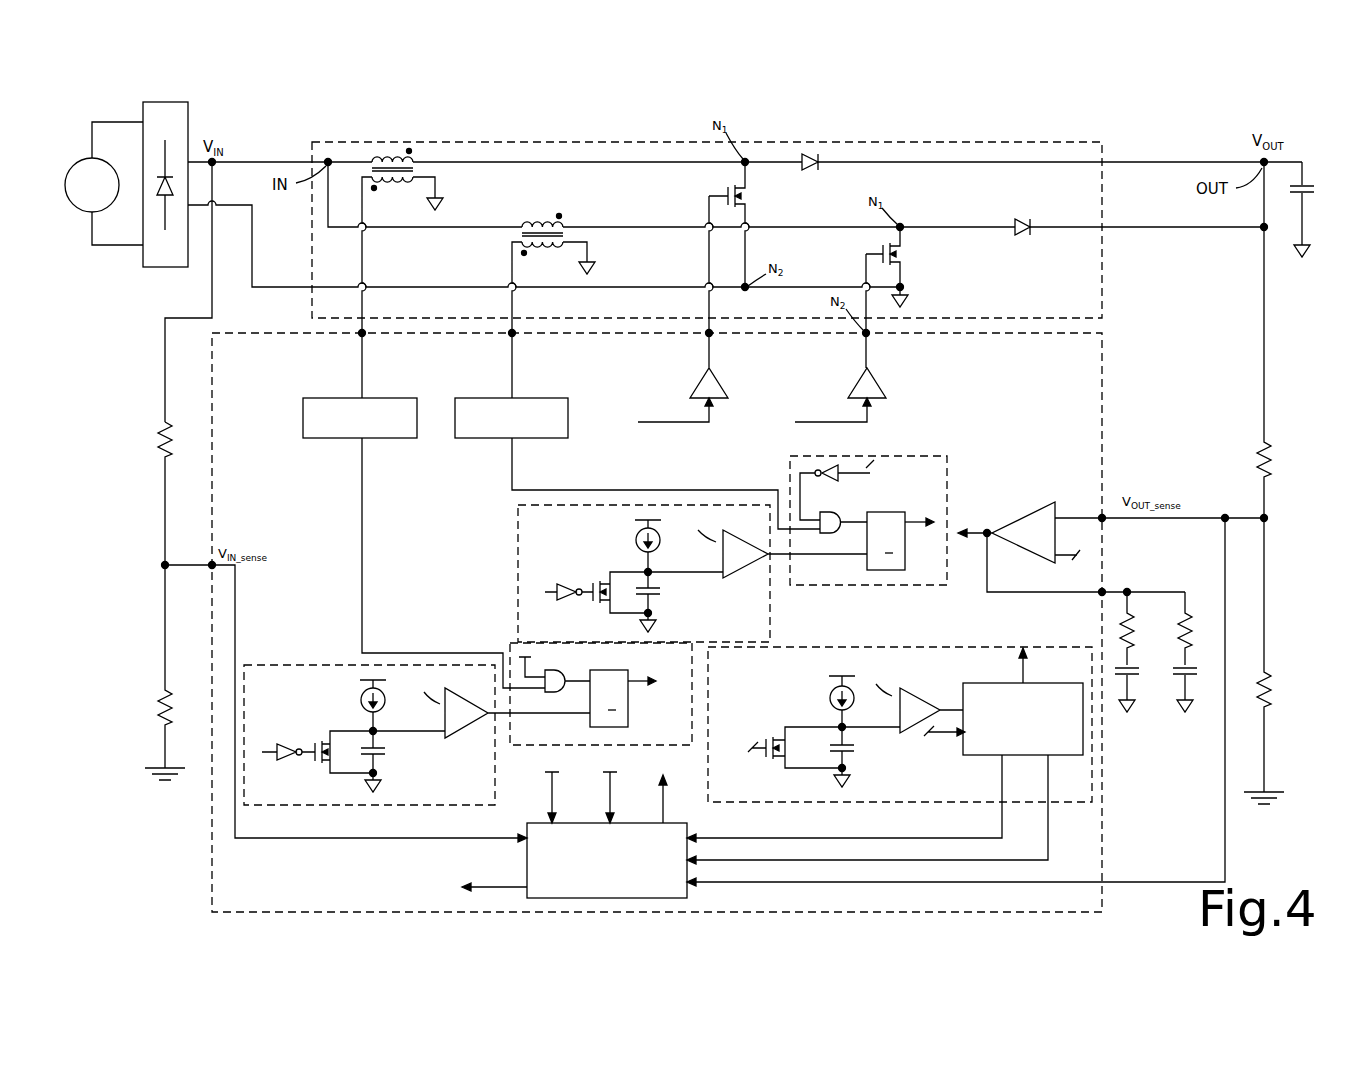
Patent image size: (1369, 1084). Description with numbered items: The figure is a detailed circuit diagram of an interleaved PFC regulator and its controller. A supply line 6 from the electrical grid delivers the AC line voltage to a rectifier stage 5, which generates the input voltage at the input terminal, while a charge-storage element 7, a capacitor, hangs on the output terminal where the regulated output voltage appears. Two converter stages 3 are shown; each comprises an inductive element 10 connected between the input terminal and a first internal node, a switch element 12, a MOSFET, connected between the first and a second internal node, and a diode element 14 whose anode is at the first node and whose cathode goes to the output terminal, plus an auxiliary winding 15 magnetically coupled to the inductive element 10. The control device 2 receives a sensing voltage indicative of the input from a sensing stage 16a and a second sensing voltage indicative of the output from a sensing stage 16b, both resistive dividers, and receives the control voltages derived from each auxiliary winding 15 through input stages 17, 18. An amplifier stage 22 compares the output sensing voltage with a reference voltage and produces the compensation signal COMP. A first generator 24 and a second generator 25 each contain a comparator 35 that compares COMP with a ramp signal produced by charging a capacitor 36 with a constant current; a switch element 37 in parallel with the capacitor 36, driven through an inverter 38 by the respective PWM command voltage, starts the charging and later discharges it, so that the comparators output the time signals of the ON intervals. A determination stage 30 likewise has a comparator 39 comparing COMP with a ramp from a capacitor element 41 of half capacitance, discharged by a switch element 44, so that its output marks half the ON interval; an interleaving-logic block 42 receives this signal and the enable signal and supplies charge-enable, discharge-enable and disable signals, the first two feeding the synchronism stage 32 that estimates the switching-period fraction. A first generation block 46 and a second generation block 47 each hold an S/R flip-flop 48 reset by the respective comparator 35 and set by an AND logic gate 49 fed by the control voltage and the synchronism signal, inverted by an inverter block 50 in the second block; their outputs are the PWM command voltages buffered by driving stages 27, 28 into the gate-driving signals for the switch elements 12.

The control device 2 is at (208, 858).
The converter stage 3 is at (458, 180).
The rectifier stage 5 is at (178, 158).
The supply line 6 is at (90, 158).
The charge-storage element 7 is at (1308, 194).
The inductive element 10 is at (392, 158).
The switch element 12 is at (742, 197).
The diode element 14 is at (810, 157).
The auxiliary winding 15 is at (396, 184).
The sensing stage 16a is at (158, 444).
The sensing stage 16b is at (1288, 497).
The input stage 17 is at (346, 398).
The input stage 18 is at (498, 398).
The amplifier stage 22 is at (1030, 505).
The first generator 24 is at (306, 660).
The second generator 25 is at (515, 516).
The driving stage 27 is at (722, 388).
The driving stage 28 is at (880, 388).
The determination stage 30 is at (882, 644).
The synchronism stage 32 is at (526, 862).
The comparator 35 is at (748, 568).
The capacitor 36 is at (662, 598).
The switch element 37 is at (598, 606).
The inverter 38 is at (578, 586).
The comparator 39 is at (912, 736).
The capacitor element 41 is at (850, 754).
The interleaving-logic block 42 is at (1060, 757).
The switch element 44 is at (774, 764).
The first generation block 46 is at (510, 642).
The second generation block 47 is at (948, 480).
The S/R flip-flop 48 is at (906, 554).
The AND logic gate 49 is at (830, 510).
The inverter block 50 is at (828, 463).